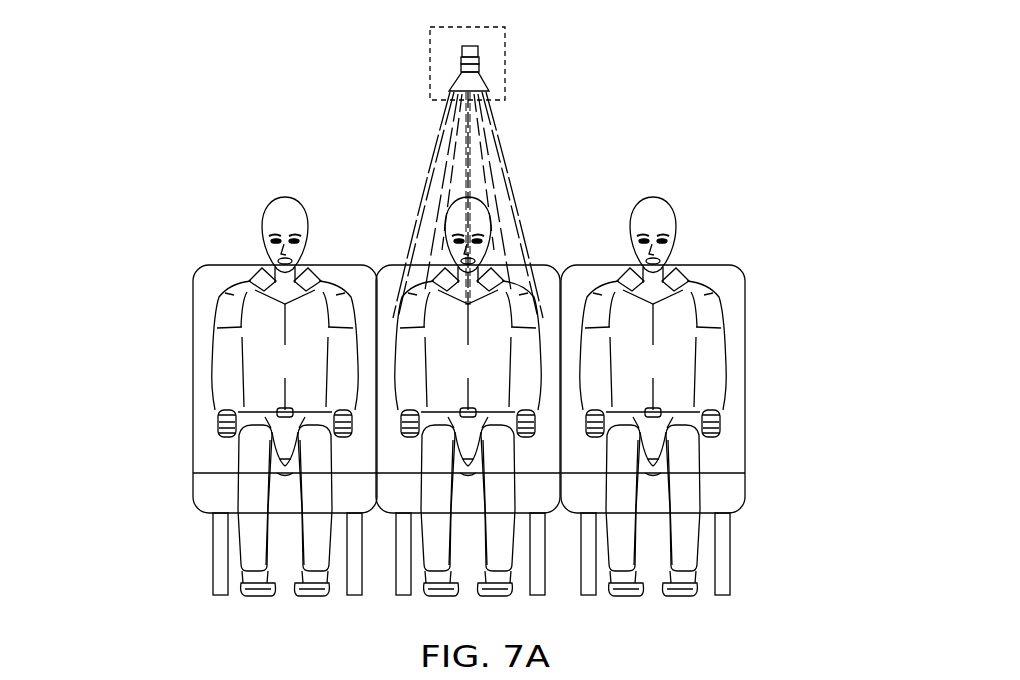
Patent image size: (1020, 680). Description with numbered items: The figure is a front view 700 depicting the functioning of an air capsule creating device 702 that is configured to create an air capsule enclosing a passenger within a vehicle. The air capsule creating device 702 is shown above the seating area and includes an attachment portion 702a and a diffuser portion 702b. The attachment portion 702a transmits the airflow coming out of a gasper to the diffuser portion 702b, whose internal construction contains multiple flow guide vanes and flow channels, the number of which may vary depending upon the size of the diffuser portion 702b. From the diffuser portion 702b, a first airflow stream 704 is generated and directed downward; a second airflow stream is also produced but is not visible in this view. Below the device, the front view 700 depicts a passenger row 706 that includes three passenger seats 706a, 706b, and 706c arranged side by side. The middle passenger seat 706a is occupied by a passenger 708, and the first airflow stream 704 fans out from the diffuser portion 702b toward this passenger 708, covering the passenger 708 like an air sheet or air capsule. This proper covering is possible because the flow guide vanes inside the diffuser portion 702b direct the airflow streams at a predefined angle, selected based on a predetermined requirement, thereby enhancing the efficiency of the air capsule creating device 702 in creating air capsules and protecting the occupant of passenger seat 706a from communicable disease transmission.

The front view 700 is at (746, 62).
The air capsule creating device 702 is at (507, 31).
The attachment portion 702a is at (456, 73).
The diffuser portion 702b is at (447, 89).
The first airflow stream 704 is at (470, 127).
The passenger row 706 is at (150, 393).
The passenger seat 706a is at (544, 265).
The passenger seat 706b is at (213, 265).
The passenger seat 706c is at (720, 268).
The passenger 708 is at (435, 313).